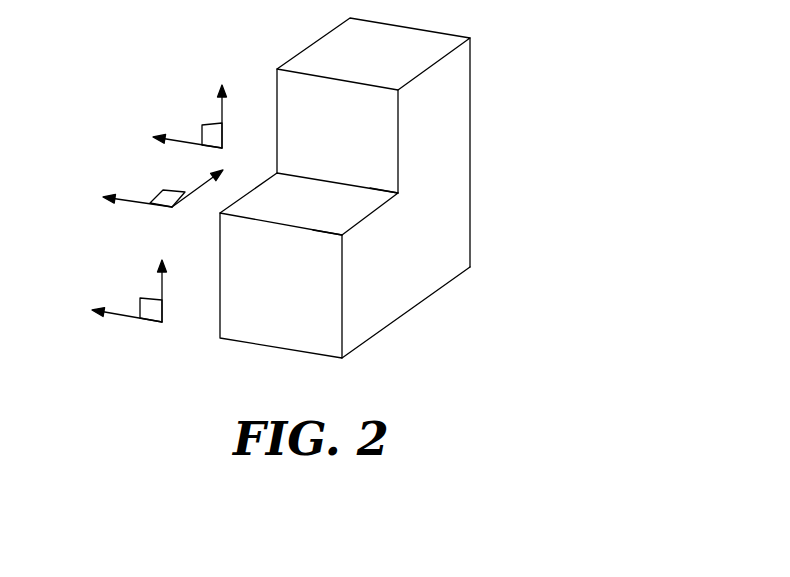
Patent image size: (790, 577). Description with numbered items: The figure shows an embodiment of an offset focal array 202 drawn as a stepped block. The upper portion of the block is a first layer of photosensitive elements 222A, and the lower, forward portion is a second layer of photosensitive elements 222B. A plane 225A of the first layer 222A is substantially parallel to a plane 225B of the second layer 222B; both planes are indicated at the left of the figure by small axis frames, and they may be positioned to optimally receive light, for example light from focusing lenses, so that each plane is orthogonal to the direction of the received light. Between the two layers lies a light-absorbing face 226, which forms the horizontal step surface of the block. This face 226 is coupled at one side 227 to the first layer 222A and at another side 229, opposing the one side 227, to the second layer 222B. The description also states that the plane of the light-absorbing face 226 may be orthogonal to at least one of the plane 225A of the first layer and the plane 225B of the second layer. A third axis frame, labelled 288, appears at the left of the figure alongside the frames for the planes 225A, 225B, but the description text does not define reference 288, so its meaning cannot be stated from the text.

The focal array 202 is at (399, 188).
The first layer of photosensitive elements 222A is at (365, 143).
The second layer of photosensitive elements 222B is at (310, 301).
The light-absorbing face 226 is at (328, 215).
The one side 227 is at (370, 192).
The another side 229 is at (313, 231).
The plane of the first layer 225A is at (203, 125).
The plane of the second layer 225B is at (147, 298).
The reference plane orientation 288 is at (167, 197).